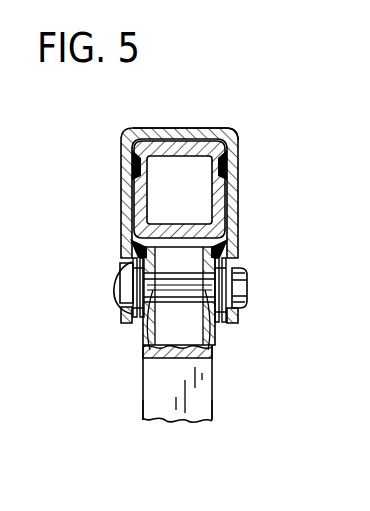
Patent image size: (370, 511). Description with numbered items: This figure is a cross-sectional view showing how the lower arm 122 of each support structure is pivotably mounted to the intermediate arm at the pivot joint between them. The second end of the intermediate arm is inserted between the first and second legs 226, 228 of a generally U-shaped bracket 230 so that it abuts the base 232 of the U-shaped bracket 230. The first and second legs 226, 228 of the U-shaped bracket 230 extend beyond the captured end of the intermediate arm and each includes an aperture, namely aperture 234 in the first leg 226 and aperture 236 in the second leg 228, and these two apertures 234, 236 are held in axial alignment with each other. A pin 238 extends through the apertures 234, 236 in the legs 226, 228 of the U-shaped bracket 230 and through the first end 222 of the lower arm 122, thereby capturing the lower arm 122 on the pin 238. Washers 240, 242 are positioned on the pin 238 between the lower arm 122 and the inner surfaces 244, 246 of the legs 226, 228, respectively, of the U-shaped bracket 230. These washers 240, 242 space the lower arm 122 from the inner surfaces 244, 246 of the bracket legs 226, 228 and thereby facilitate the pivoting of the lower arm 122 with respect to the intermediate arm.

The lower arm 122 is at (157, 408).
The first end of lower arm 222 is at (220, 391).
The first leg 226 is at (126, 211).
The second leg 228 is at (232, 196).
The U-shaped bracket 230 is at (242, 129).
The base of U-shaped bracket 232 is at (173, 130).
The aperture 234 is at (143, 356).
The aperture 236 is at (247, 290).
The pin 238 is at (178, 264).
The washer 240 is at (137, 318).
The washer 242 is at (226, 322).
The inner surface 244 is at (132, 165).
The inner surface 246 is at (228, 159).